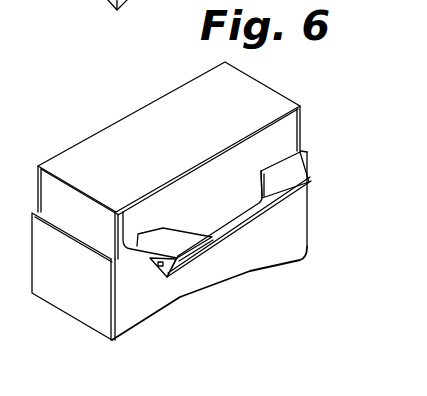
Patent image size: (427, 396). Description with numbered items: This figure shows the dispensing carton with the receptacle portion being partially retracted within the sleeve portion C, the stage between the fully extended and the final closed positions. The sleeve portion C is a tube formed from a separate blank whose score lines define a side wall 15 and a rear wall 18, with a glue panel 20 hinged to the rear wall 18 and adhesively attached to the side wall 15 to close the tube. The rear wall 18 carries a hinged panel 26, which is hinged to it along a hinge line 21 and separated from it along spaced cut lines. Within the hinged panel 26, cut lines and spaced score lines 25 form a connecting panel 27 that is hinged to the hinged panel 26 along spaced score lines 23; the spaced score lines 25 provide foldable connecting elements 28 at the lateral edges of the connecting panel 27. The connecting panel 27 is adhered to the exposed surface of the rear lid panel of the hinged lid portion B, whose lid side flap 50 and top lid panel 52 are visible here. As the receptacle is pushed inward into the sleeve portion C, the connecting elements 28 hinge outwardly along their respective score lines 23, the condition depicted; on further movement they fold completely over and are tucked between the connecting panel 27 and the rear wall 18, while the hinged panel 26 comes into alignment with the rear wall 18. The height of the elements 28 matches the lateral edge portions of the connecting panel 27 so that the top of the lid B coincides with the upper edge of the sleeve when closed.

The side wall 15 is at (75, 282).
The rear wall 18 is at (143, 302).
The glue panel 20 is at (90, 0).
The hinge line 21 is at (216, 250).
The spaced score lines 23 is at (290, 190).
The spaced score lines 25 is at (151, 233).
The hinged panel 26 is at (232, 238).
The connecting panel 27 is at (238, 189).
The foldable connecting elements 28 is at (171, 242).
The lid side flap 50 is at (81, 221).
The top lid panel 52 is at (161, 161).
The hinged lid portion B is at (191, 161).
The sleeve portion C is at (186, 254).